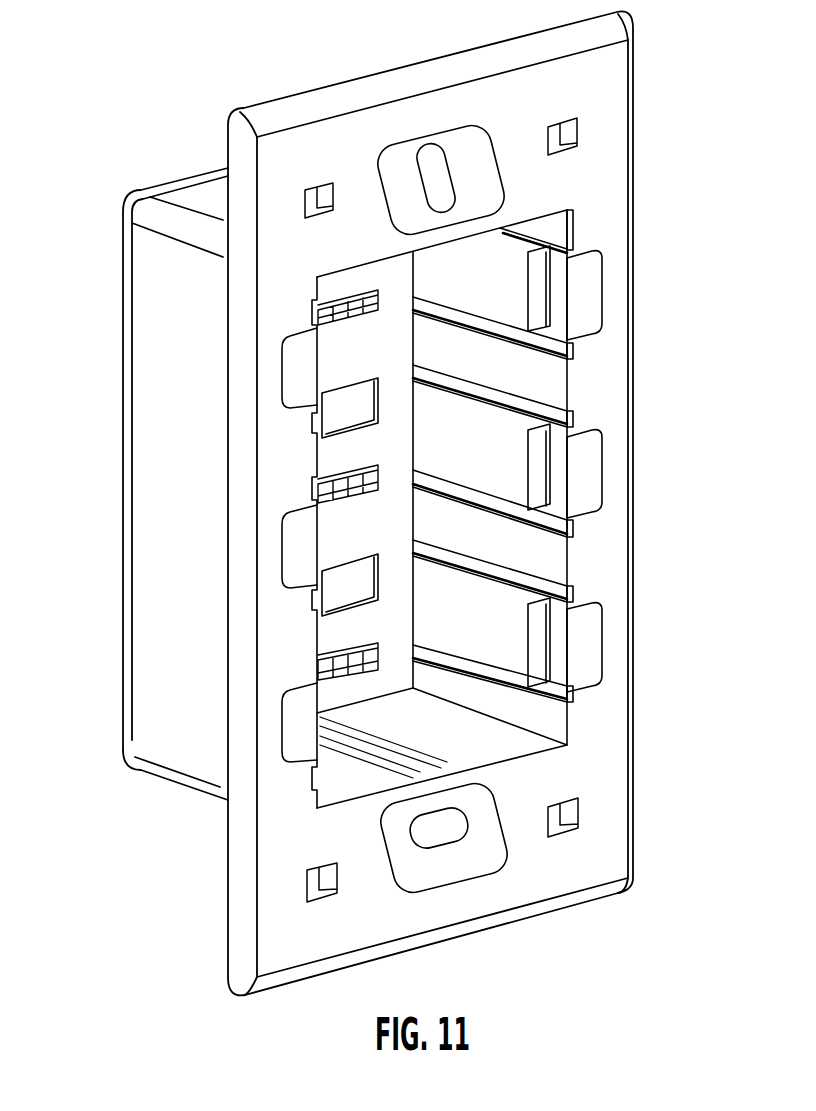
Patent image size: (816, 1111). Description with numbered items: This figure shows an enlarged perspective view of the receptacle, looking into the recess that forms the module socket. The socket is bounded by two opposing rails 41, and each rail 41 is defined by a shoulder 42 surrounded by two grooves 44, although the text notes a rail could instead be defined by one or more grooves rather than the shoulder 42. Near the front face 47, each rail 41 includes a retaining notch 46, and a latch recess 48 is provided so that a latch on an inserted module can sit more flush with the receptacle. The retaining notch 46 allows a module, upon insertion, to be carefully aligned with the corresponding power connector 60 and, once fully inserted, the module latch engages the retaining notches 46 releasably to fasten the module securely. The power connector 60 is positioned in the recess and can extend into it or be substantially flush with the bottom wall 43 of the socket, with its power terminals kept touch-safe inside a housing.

The rail 41 is at (393, 442).
The shoulder 42 is at (473, 390).
The bottom wall 43 is at (352, 532).
The groove 44 is at (543, 408).
The retaining notch 46 is at (545, 468).
The front face 47 is at (291, 287).
The latch recess 48 is at (583, 677).
The power connector 60 is at (382, 297).